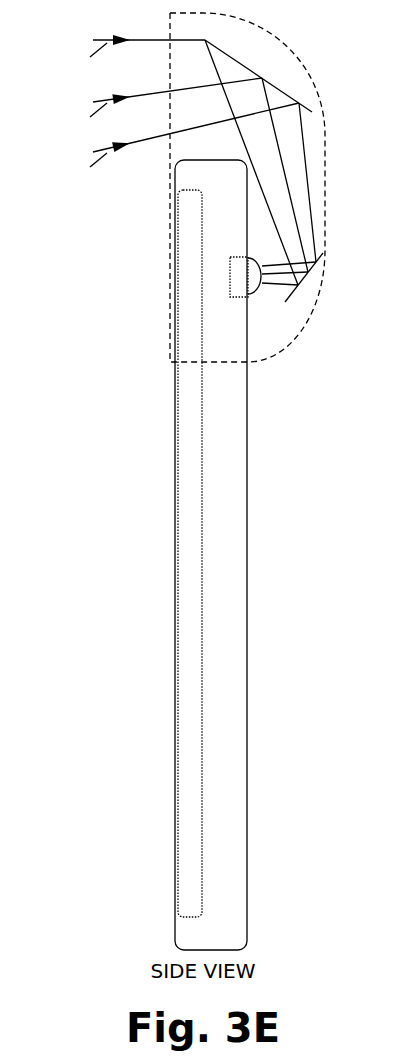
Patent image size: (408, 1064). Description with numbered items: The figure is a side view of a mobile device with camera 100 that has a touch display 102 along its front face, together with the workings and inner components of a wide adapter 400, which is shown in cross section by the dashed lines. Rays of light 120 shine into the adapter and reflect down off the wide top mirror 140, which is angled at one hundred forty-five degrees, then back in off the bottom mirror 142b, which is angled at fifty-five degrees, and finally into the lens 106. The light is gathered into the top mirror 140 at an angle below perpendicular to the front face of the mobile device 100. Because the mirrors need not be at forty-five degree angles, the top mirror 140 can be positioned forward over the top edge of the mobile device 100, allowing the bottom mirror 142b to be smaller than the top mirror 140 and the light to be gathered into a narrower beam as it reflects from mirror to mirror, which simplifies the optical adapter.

The mobile device with camera 100 is at (248, 693).
The touch display 102 is at (175, 412).
The lens 106 is at (258, 296).
The rays of light 120 is at (222, 387).
The wide top mirror 140 is at (238, 63).
The bottom mirror 142b is at (300, 280).
The wide adapter 400 is at (307, 75).